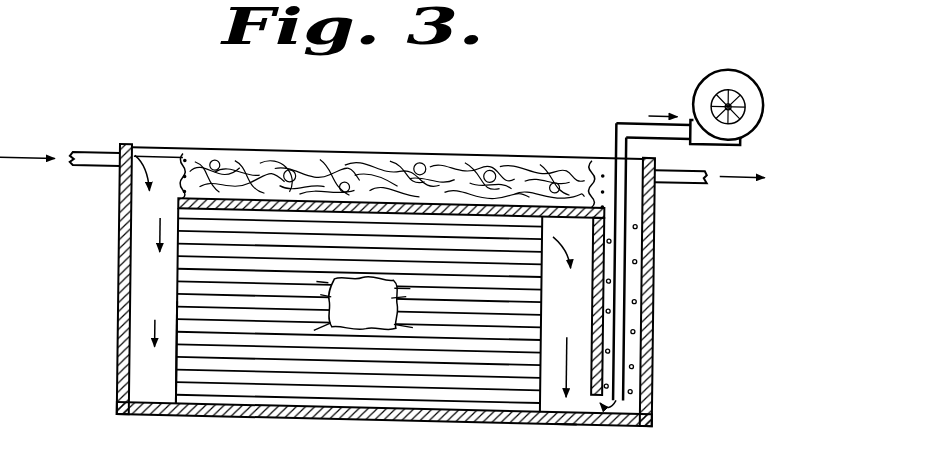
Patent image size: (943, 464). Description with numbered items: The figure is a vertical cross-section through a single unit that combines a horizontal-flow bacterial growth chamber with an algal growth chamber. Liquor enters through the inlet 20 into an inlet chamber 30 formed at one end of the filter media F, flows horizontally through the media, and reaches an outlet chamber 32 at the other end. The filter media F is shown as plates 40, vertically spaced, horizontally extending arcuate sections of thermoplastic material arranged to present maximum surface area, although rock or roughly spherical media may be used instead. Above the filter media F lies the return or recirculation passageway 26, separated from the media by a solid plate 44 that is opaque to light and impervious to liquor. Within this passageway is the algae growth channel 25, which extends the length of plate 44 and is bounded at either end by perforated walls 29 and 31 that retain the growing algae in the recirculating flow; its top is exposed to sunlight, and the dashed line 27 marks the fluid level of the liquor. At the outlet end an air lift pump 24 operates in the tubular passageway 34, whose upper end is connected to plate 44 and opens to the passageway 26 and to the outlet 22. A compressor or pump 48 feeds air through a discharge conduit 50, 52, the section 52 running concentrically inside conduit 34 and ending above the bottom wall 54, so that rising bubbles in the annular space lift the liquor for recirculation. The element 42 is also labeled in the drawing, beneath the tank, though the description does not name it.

The inlet 20 is at (100, 153).
The outlet 22 is at (683, 171).
The air lift pump 24 is at (655, 306).
The algae growth channel 25 is at (400, 178).
The return or recirculation passageway 26 is at (183, 188).
The dashed line indicating fluid level 27 is at (466, 162).
The perforated wall 29 is at (184, 196).
The inlet chamber 30 is at (380, 285).
The perforated wall 31 is at (592, 165).
The outlet chamber 32 is at (586, 301).
The tubular passageway 34 is at (636, 367).
The plates 40 is at (359, 310).
The bottom wall 42 is at (479, 400).
The solid plate 44 is at (181, 207).
The compressor or pump 48 is at (736, 124).
The discharge conduit 50 is at (653, 112).
The discharge conduit section 52 is at (621, 257).
The bottom wall 54 is at (568, 414).
The filter media F is at (200, 357).